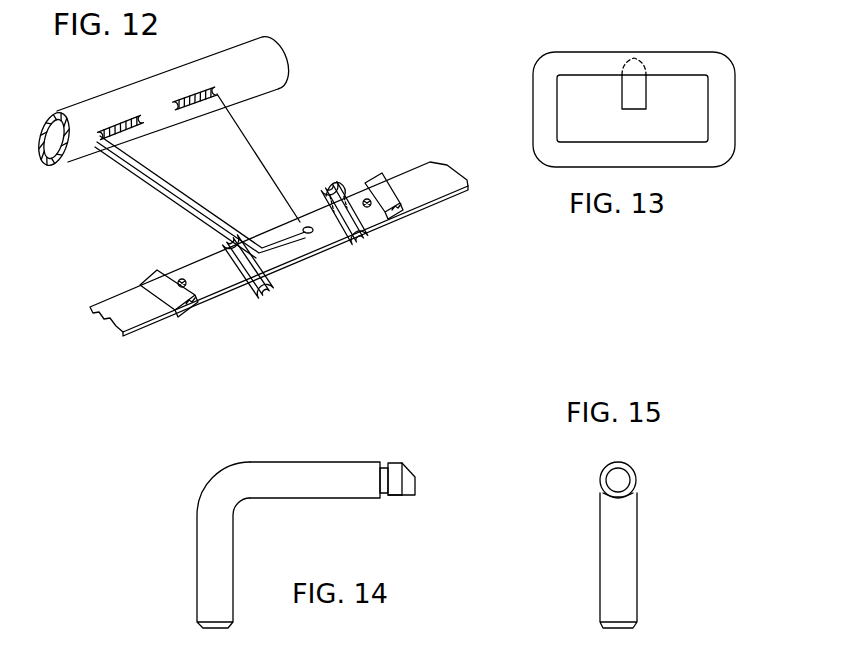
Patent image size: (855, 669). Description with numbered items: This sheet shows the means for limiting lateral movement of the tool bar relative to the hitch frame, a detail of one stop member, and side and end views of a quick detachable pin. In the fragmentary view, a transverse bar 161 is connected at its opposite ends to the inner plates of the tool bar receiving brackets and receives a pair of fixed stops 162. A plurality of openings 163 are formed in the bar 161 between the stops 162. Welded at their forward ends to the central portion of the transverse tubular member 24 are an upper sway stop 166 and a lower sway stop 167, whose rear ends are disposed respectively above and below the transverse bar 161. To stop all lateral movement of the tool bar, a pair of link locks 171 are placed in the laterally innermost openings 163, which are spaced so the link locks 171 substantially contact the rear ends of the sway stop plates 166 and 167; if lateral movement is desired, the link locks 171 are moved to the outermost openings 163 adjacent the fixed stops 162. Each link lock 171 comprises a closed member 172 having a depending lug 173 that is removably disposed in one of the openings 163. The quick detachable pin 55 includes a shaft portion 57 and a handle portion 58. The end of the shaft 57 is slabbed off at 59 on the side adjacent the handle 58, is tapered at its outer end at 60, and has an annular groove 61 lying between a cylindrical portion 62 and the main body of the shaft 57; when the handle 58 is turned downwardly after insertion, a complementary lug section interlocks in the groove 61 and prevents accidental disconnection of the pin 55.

In FIG. 12, the transverse tubular member 24 is at (104, 103).
In FIG. 12, the transverse bar 161 is at (118, 300).
In FIG. 12, the fixed stop 162 is at (377, 183).
In FIG. 12, the opening 163 is at (307, 226).
In FIG. 12, the upper sway stop 166 is at (240, 136).
In FIG. 12, the lower sway stop 167 is at (143, 182).
In FIG. 12, the link lock 171 is at (353, 242).
In FIG. 13, the link lock 171 is at (742, 79).
In FIG. 13, the closed member 172 is at (537, 95).
In FIG. 12, the depending lug 173 is at (333, 193).
In FIG. 13, the depending lug 173 is at (635, 97).
In FIG. 14, the quick detachable pin 55 is at (324, 511).
In FIG. 15, the quick detachable pin 55 is at (616, 530).
In FIG. 14, the shaft portion 57 is at (314, 470).
In FIG. 14, the handle portion 58 is at (224, 567).
In FIG. 15, the handle portion 58 is at (608, 560).
In FIG. 14, the slabbed off portion 59 is at (398, 495).
In FIG. 15, the slabbed off portion 59 is at (627, 495).
In FIG. 14, the tapered end 60 is at (410, 474).
In FIG. 15, the tapered end 60 is at (637, 476).
In FIG. 14, the annular groove 61 is at (381, 468).
In FIG. 14, the cylindrical portion 62 is at (397, 467).